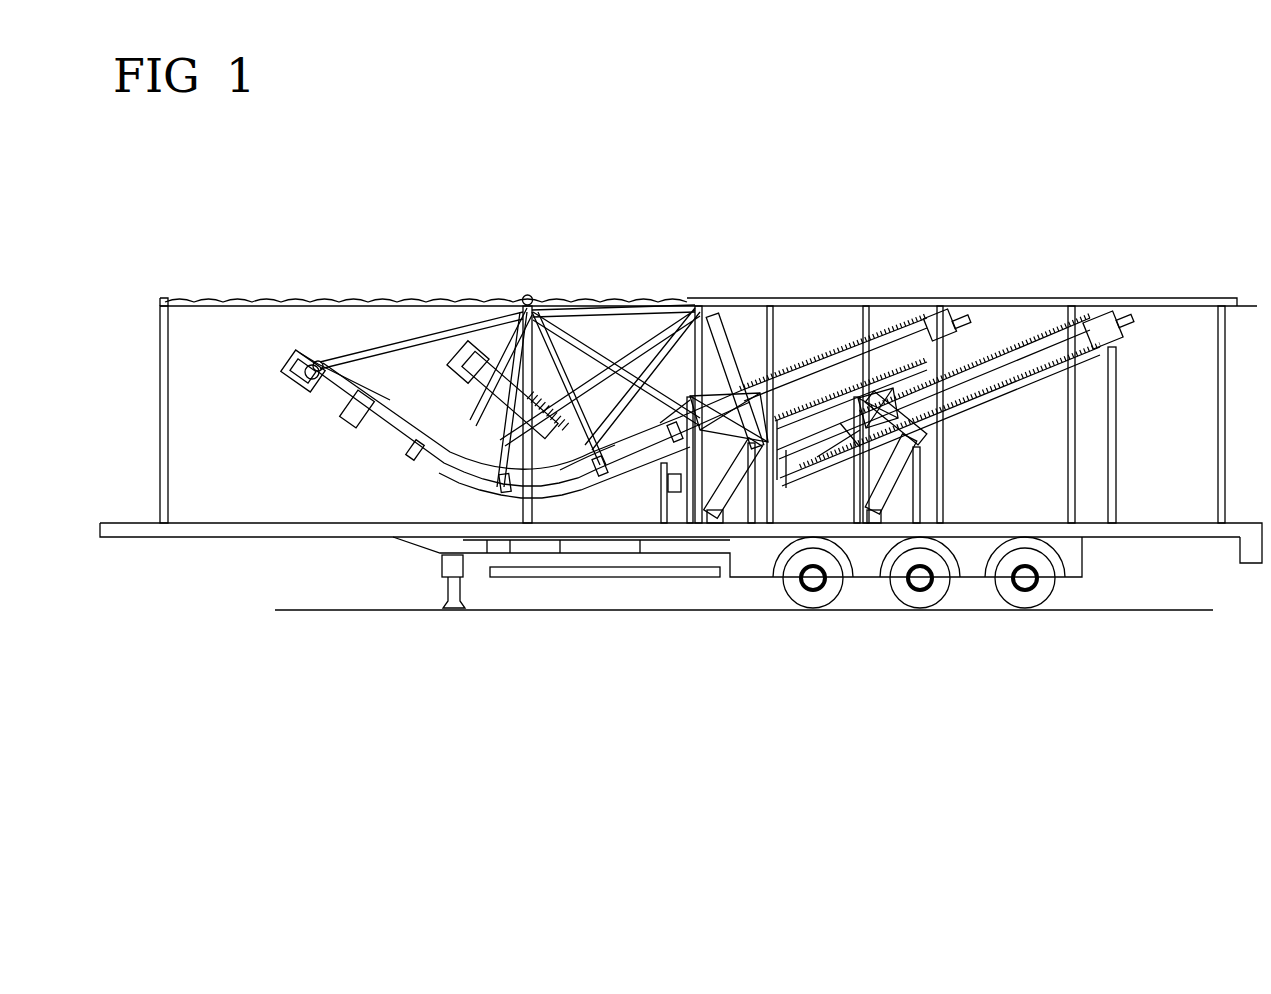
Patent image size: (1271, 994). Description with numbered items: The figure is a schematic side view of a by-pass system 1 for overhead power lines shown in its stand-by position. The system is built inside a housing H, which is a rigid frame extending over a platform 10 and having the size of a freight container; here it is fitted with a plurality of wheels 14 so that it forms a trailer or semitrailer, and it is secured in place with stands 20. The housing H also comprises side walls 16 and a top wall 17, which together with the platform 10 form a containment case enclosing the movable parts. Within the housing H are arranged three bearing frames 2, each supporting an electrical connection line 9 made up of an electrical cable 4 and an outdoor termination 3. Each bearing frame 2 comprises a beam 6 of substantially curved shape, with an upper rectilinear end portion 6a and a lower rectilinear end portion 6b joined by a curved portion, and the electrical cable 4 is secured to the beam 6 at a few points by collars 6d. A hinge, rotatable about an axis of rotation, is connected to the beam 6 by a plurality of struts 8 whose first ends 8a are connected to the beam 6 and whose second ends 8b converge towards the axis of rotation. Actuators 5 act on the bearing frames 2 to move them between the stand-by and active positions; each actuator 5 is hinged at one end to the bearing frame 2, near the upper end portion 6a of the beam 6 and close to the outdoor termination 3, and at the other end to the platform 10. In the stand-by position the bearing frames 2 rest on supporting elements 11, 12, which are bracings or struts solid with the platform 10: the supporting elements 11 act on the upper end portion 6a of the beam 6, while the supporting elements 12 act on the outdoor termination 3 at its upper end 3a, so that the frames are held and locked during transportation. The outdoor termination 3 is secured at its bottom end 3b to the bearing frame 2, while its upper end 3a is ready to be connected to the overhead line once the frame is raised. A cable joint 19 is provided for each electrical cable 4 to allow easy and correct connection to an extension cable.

The by-pass system for overhead power lines 1 is at (1053, 160).
The housing H is at (1170, 287).
The bearing frame 2 is at (390, 315).
The outdoor termination 3 is at (845, 337).
The upper end of the outdoor termination 3a is at (1110, 345).
The bottom end of the outdoor termination 3b is at (862, 400).
The electrical cable 4 is at (548, 490).
The actuator 5 is at (722, 493).
The beam 6 is at (400, 350).
The upper end portion of the beam 6a is at (745, 410).
The lower end portion of the beam 6b is at (372, 430).
The collars 6d is at (593, 470).
The struts 8 is at (432, 323).
The first ends of the struts 8a is at (323, 357).
The second ends of the struts 8b is at (535, 310).
The electrical connection line 9 is at (383, 480).
The platform 10 is at (1167, 533).
The supporting elements 11 is at (930, 466).
The supporting elements 12 is at (1112, 418).
The wheels 14 is at (1035, 598).
The side walls 16 is at (160, 372).
The top wall 17 is at (520, 301).
The cable joint 19 is at (320, 383).
The stands 20 is at (452, 585).